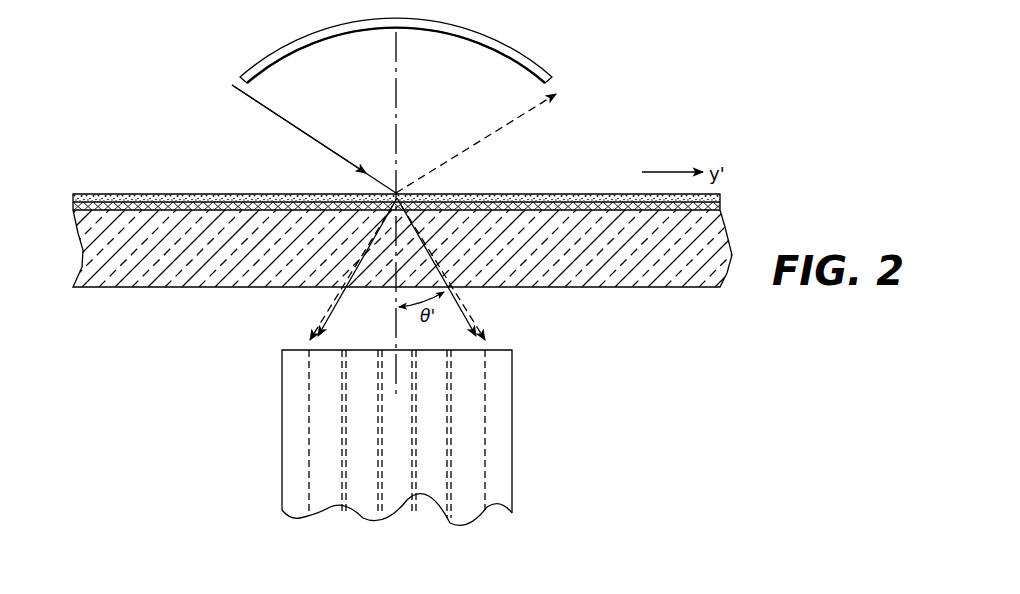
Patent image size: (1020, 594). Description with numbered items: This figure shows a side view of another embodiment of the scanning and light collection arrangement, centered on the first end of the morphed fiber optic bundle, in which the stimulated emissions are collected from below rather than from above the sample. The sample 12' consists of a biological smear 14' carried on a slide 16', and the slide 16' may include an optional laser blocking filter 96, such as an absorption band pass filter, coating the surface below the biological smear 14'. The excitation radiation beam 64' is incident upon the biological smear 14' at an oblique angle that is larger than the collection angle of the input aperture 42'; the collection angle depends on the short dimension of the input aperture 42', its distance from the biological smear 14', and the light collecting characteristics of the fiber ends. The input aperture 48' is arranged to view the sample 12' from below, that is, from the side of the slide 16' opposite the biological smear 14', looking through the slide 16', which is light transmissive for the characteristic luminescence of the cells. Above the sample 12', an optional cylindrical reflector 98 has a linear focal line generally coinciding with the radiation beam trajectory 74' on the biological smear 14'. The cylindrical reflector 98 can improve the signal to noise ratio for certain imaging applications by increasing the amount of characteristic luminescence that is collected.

The sample 12' is at (400, 201).
The biological smear 14' is at (387, 181).
The laser blocking filter 96 is at (73, 207).
The slide 16' is at (396, 265).
The excitation radiation beam 64' is at (390, 139).
The radiation beam trajectory 74' is at (351, 183).
The cylindrical reflector 98 is at (502, 45).
The input aperture 42' is at (374, 437).
The input aperture 48' is at (437, 294).